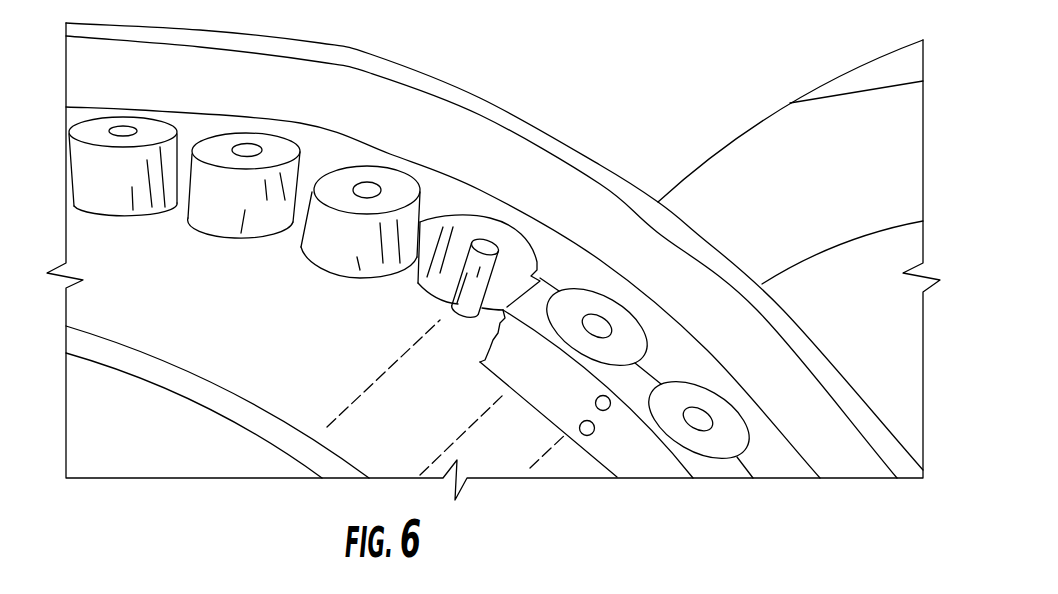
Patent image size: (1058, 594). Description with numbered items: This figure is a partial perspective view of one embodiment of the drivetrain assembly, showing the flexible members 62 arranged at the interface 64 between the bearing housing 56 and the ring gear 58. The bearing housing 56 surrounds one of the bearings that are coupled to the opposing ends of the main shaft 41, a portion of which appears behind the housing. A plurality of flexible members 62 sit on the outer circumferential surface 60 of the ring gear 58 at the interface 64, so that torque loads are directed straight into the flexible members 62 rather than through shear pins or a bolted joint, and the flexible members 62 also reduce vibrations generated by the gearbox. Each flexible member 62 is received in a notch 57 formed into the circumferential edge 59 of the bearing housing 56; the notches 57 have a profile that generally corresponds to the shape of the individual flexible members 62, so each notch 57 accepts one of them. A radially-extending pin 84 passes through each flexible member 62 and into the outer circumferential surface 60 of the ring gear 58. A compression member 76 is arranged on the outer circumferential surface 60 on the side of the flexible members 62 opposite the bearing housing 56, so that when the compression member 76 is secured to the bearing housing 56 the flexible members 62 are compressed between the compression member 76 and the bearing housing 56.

The main shaft 41 is at (900, 332).
The bearing housing 56 is at (646, 186).
The notch 57 is at (510, 248).
The ring gear 58 is at (484, 443).
The circumferential edge 59 is at (418, 275).
The outer circumferential surface 60 is at (563, 467).
The flexible member 62 is at (310, 260).
The interface 64 is at (754, 486).
The compression member 76 is at (494, 375).
The radially-extending pin 84 is at (486, 240).